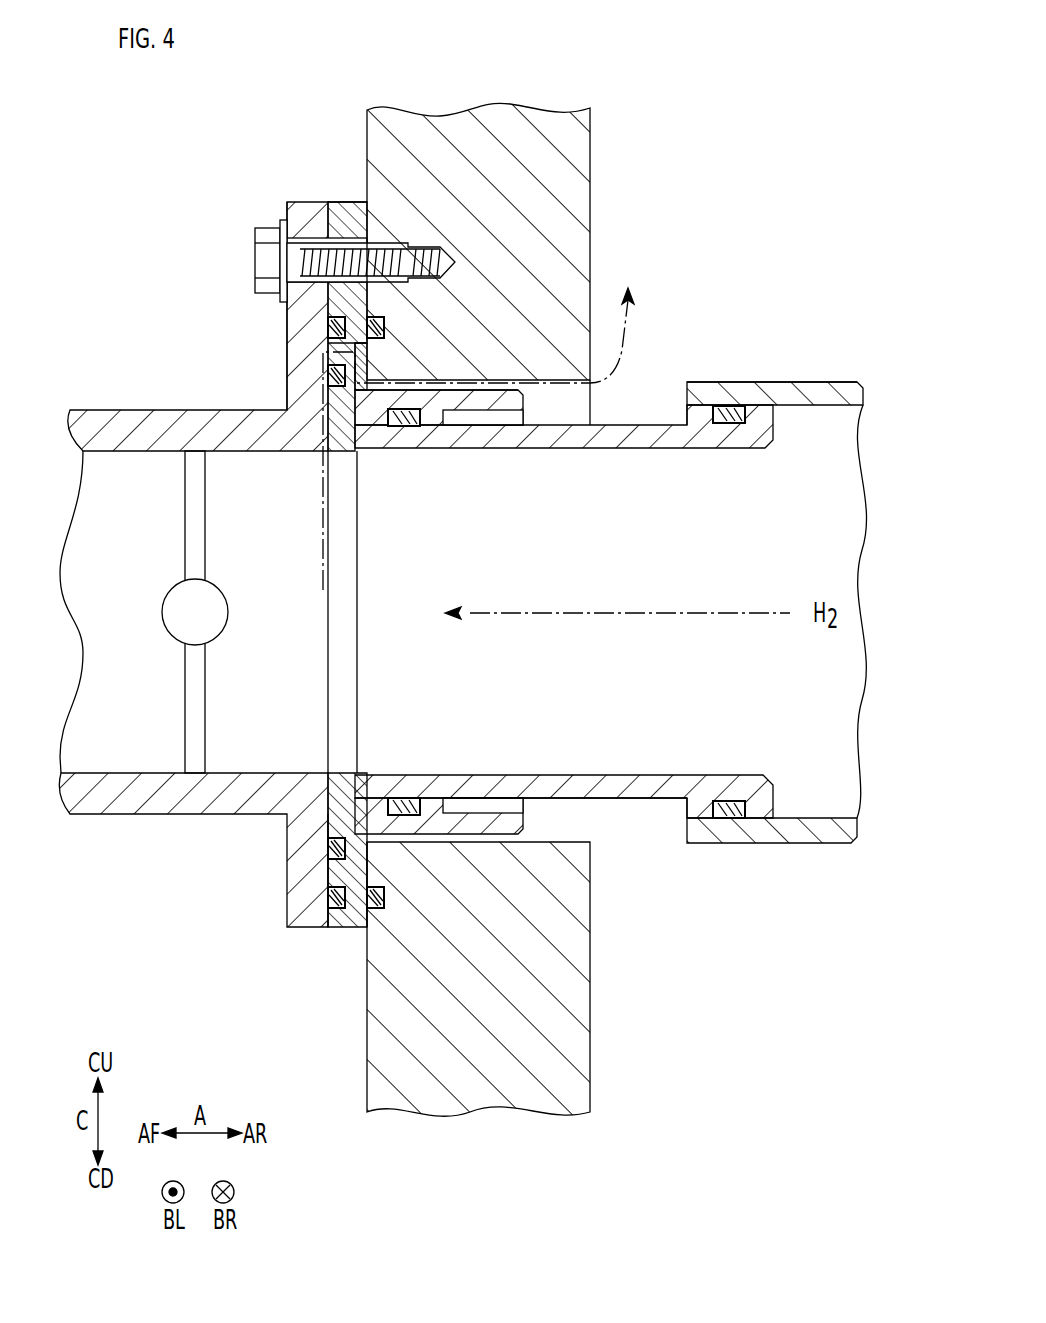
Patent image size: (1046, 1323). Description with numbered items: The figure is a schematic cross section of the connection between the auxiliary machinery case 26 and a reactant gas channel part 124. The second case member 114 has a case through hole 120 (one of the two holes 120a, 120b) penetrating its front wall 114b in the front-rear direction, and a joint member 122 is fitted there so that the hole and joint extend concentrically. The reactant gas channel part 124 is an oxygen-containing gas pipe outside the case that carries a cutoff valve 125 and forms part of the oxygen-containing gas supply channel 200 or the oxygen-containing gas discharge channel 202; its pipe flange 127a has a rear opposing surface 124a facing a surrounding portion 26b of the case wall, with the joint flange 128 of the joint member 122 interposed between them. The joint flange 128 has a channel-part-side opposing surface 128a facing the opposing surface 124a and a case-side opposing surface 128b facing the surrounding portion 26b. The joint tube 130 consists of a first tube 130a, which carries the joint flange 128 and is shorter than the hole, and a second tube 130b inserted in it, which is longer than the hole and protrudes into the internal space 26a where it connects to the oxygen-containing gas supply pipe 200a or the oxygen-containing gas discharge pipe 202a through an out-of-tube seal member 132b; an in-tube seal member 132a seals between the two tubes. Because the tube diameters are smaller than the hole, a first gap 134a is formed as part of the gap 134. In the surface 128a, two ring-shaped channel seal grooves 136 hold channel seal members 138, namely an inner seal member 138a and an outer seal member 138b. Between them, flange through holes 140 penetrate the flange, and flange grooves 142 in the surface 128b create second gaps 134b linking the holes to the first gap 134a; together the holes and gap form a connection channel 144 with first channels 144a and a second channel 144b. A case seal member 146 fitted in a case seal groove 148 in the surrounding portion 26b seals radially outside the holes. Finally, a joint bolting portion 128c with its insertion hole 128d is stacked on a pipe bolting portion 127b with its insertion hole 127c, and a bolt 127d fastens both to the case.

The auxiliary machinery case 26 is at (448, 1098).
The internal space 26a is at (511, 642).
The surrounding portion 26b is at (350, 870).
The second case member 114 is at (478, 1012).
The front wall 114b is at (478, 1012).
The case through hole 120 is at (564, 665).
The case through hole 120a is at (564, 665).
The case through hole 120b is at (564, 665).
The joint member 122 is at (653, 798).
The reactant gas channel part 124 is at (198, 321).
The opposing surface 124a is at (338, 925).
The cutoff valve 125 is at (183, 594).
The pipe flange 127a is at (300, 914).
The pipe bolting portion 127b is at (287, 207).
The insertion hole 127c is at (305, 262).
The bolt 127d is at (262, 246).
The joint flange 128 is at (266, 306).
The channel-part-side opposing surface 128a is at (330, 830).
The case-side opposing surface 128b is at (367, 800).
The joint bolting portion 128c is at (338, 200).
The insertion hole 128d is at (345, 285).
The joint tube 130 is at (521, 752).
The first tube 130a is at (510, 805).
The second tube 130b is at (590, 797).
The in-tube seal member 132a is at (400, 797).
The out-of-tube seal member 132b is at (730, 805).
The gap 134 is at (449, 449).
The first gap 134a is at (498, 392).
The second gap 134b is at (392, 365).
The channel seal groove 136 is at (334, 850).
The channel seal member 138 is at (204, 869).
The inner seal member 138a is at (330, 848).
The outer seal member 138b is at (330, 898).
The flange through hole 140 is at (459, 358).
The flange groove 142 is at (372, 365).
The connection channel 144 is at (560, 399).
The first channel 144a is at (352, 348).
The second channel 144b is at (449, 449).
The case seal member 146 is at (385, 895).
The case seal groove 148 is at (362, 908).
The oxygen-containing gas supply channel 200 is at (463, 673).
The oxygen-containing gas supply pipe 200a is at (772, 360).
The oxygen-containing gas discharge channel 202 is at (143, 773).
The oxygen-containing gas discharge pipe 202a is at (815, 394).